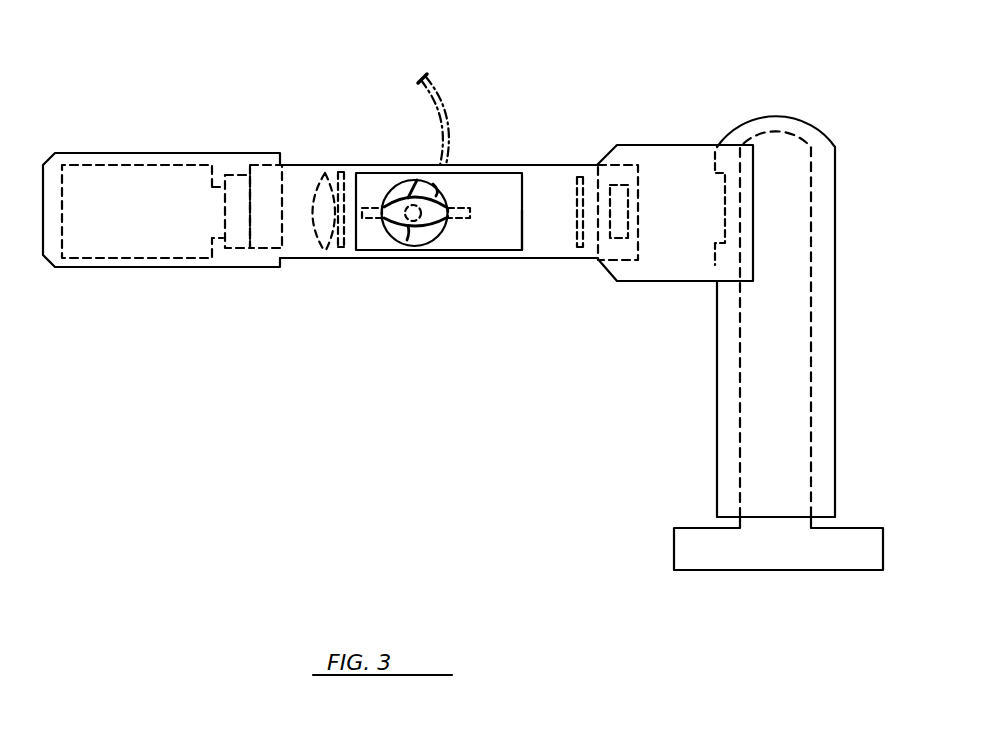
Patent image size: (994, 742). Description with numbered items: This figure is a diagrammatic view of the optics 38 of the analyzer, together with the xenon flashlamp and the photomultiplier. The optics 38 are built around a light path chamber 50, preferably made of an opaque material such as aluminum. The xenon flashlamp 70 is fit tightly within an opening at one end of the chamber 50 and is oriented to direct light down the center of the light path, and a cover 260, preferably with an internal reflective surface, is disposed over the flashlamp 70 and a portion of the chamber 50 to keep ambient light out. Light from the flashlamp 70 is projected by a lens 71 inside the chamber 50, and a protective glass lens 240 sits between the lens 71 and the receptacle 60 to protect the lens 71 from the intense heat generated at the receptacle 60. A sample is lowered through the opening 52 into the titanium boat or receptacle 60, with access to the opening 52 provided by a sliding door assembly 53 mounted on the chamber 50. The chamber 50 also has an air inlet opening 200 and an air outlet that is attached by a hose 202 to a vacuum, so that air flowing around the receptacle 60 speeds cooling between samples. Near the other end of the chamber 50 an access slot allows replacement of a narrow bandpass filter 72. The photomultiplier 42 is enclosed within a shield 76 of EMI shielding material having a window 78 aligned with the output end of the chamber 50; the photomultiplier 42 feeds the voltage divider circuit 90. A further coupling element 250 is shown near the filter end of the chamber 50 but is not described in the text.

The cover 260 is at (140, 153).
The xenon flashlamp 70 is at (152, 262).
The protective glass lens 240 is at (333, 170).
The lens 71 is at (325, 255).
The optics 38 is at (372, 268).
The light path chamber 50 is at (485, 258).
The sliding door assembly 53 is at (503, 252).
The receptacle 60 is at (415, 180).
The opening 52 is at (437, 190).
The air inlet opening 200 is at (406, 247).
The hose 202 is at (460, 103).
The coupling 250 is at (575, 180).
The narrow bandpass filter 72 is at (612, 265).
The window 78 is at (725, 192).
The shield 76 is at (716, 353).
The photomultiplier 42 is at (740, 422).
The voltage divider circuit 90 is at (674, 548).